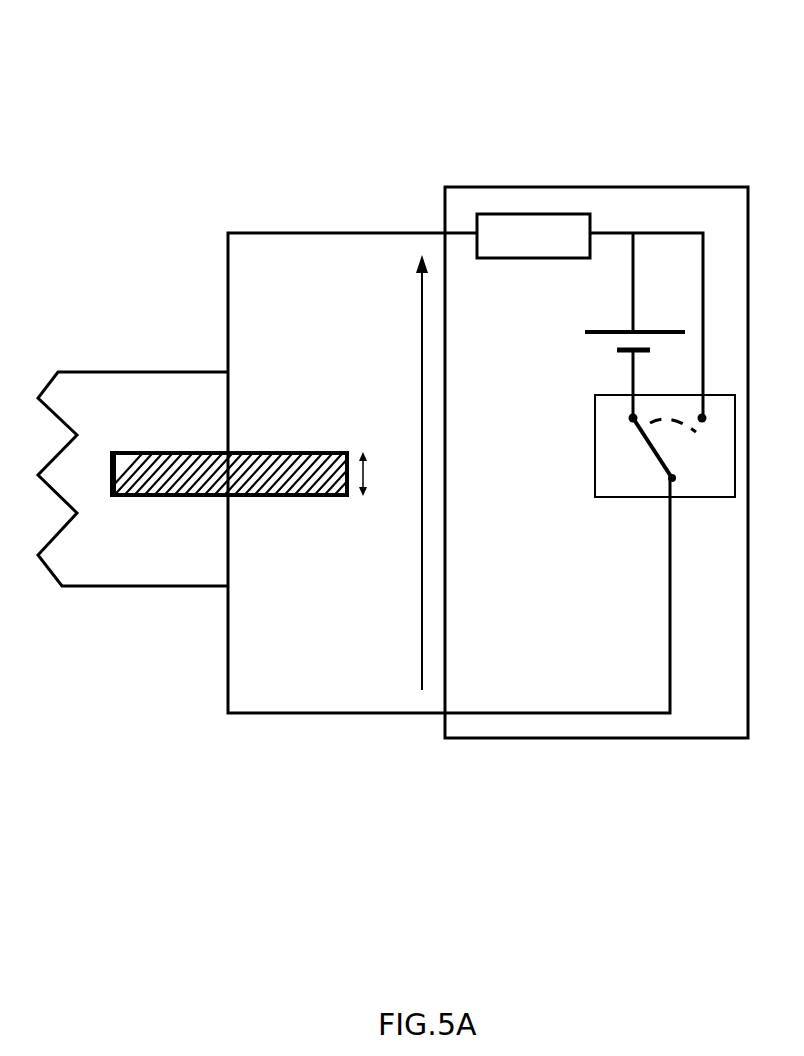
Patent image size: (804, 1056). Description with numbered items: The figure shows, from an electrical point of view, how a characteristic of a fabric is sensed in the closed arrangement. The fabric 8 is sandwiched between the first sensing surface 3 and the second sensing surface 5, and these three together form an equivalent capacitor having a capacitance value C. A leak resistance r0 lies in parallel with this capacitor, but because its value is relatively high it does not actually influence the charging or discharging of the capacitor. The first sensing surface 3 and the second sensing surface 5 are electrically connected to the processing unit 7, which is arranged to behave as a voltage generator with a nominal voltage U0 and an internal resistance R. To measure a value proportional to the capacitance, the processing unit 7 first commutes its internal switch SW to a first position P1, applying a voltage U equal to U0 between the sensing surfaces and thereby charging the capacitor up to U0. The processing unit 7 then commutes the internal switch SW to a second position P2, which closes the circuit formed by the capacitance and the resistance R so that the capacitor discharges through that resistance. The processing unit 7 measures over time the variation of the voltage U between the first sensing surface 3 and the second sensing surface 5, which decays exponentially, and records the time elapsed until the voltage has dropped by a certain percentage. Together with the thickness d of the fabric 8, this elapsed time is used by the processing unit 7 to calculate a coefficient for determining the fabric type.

The first sensing surface 3 is at (327, 452).
The second sensing surface 5 is at (318, 497).
The processing unit 7 is at (650, 187).
The fabric 8 is at (112, 470).
The leak resistance r0 is at (43, 557).
The internal resistance R is at (536, 212).
The voltage U is at (408, 472).
The nominal voltage U0 is at (573, 322).
The thickness d is at (372, 474).
The internal switch SW is at (650, 425).
The first position P1 is at (620, 418).
The second position P2 is at (713, 418).